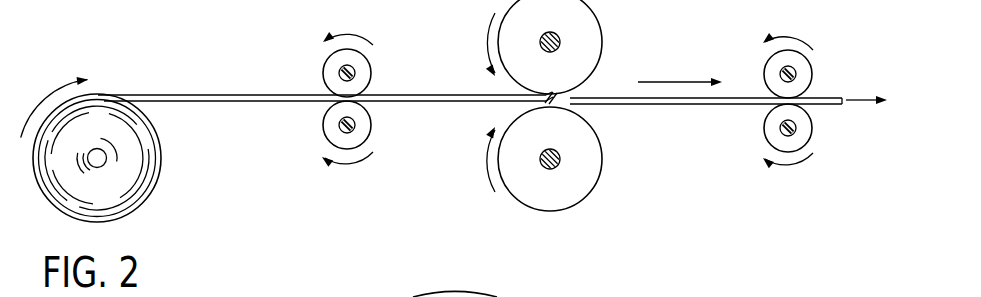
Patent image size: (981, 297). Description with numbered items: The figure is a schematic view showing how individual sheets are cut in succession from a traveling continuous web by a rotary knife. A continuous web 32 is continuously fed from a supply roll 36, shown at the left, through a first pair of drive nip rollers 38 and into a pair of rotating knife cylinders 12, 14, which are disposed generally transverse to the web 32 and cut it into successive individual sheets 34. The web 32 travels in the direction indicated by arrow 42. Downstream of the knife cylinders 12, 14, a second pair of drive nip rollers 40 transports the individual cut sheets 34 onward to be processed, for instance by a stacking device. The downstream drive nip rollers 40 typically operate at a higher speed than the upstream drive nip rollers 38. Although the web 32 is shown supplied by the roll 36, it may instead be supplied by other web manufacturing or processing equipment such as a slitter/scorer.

The rotating knife cylinder 12 is at (560, 47).
The rotating knife cylinder 14 is at (590, 170).
The web 32 is at (183, 96).
The sheets 34 is at (668, 105).
The supply roll 36 is at (142, 198).
The drive nip rollers 38 is at (364, 32).
The drive nip rollers 40 is at (822, 60).
The arrow 42 is at (673, 82).